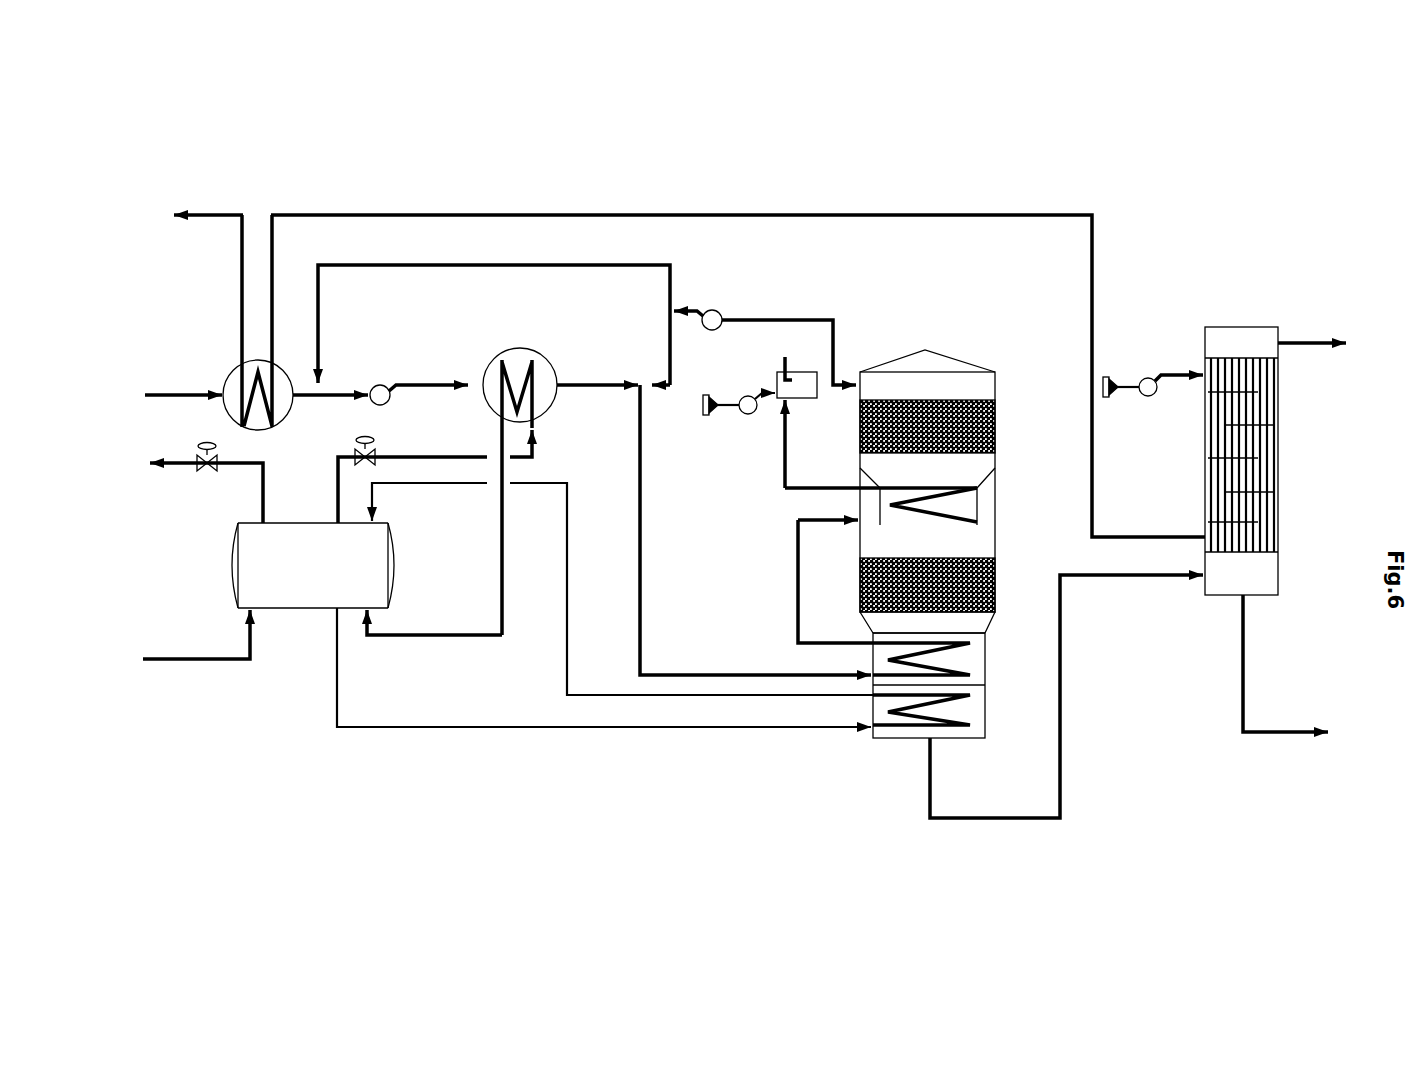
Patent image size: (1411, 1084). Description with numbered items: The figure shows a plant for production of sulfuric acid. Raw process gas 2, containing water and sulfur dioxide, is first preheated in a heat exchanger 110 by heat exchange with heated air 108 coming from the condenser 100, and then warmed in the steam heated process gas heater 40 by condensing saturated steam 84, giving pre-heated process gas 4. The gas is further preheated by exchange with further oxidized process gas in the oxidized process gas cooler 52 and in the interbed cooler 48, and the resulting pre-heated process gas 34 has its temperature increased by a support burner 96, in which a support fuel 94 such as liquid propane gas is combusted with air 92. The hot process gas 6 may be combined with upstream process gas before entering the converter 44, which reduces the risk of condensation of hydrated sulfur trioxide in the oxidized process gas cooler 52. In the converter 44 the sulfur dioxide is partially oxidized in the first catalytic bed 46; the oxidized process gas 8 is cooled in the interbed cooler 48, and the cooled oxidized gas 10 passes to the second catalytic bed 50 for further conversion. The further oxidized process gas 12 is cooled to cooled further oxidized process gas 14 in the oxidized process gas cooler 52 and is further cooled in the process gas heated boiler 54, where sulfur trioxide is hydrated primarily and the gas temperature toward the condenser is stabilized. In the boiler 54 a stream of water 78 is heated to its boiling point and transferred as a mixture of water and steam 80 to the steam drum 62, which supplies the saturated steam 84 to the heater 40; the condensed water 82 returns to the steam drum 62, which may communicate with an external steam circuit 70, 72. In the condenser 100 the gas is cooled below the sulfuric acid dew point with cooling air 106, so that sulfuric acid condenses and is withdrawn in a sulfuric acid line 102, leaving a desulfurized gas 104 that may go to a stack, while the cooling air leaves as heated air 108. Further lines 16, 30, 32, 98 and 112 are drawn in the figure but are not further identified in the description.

The raw process gas 2 is at (218, 393).
The pre-heated process gas 4 is at (585, 383).
The hot process gas 6 is at (835, 318).
The oxidized process gas 8 is at (940, 480).
The cooled oxidized gas 10 is at (940, 545).
The further oxidized process gas 12 is at (940, 627).
The cooled further oxidized process gas 14 is at (940, 690).
The bottoms stream 16 is at (1030, 815).
The feed line 30 is at (748, 672).
The feed line 32 is at (797, 612).
The pre-heated process gas 34 is at (782, 470).
The steam heated process gas heater 40 is at (497, 355).
The converter 44 is at (905, 352).
The first catalytic bed 46 is at (997, 425).
The interbed cooler 48 is at (965, 508).
The second catalytic bed 50 is at (997, 570).
The oxidized process gas cooler 52 is at (960, 655).
The process gas heated boiler 54 is at (960, 722).
The steam drum 62 is at (322, 610).
The external steam circuit 70 is at (165, 657).
The external steam circuit 72 is at (165, 462).
The stream of water 78 is at (440, 725).
The mixture of water and steam 80 is at (625, 693).
The condensed water 82 is at (395, 640).
The saturated steam 84 is at (540, 445).
The air 92 is at (705, 412).
The support fuel 94 is at (782, 362).
The support burner 96 is at (800, 402).
The recycle line 98 is at (400, 268).
The condenser 100 is at (1210, 325).
The sulfuric acid line 102 is at (1308, 730).
The desulfurized gas 104 is at (1320, 340).
The cooling air 106 is at (1125, 375).
The heated air 108 is at (1040, 215).
The heat exchanger 110 is at (245, 360).
The outlet line 112 is at (212, 222).